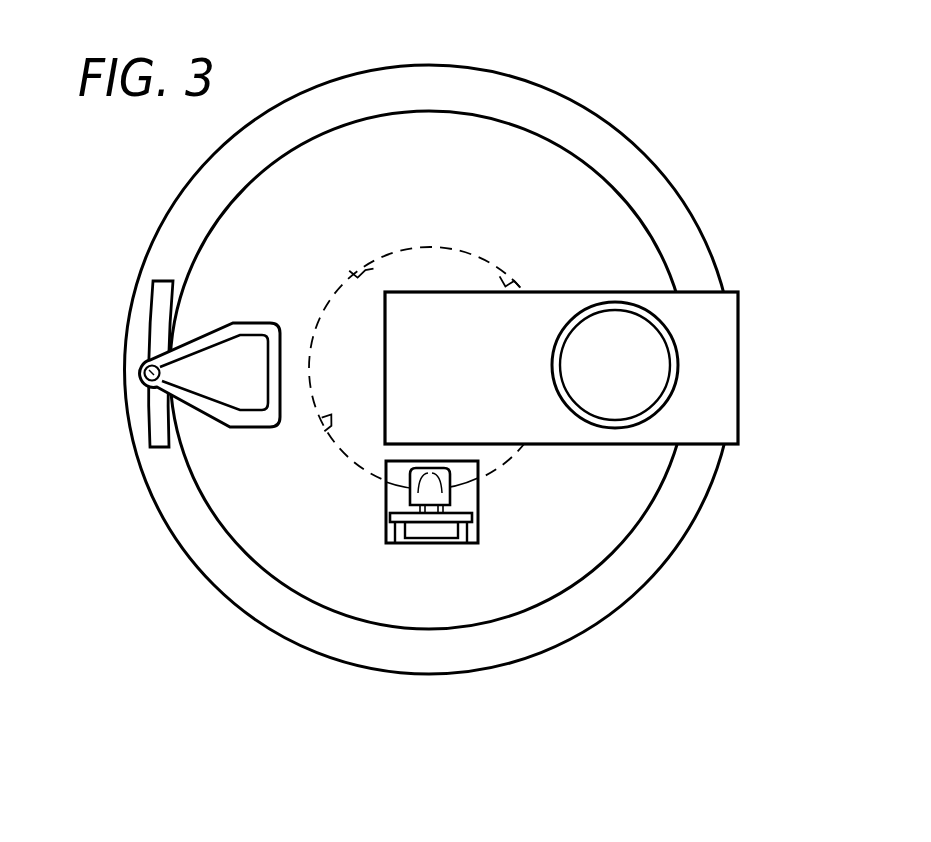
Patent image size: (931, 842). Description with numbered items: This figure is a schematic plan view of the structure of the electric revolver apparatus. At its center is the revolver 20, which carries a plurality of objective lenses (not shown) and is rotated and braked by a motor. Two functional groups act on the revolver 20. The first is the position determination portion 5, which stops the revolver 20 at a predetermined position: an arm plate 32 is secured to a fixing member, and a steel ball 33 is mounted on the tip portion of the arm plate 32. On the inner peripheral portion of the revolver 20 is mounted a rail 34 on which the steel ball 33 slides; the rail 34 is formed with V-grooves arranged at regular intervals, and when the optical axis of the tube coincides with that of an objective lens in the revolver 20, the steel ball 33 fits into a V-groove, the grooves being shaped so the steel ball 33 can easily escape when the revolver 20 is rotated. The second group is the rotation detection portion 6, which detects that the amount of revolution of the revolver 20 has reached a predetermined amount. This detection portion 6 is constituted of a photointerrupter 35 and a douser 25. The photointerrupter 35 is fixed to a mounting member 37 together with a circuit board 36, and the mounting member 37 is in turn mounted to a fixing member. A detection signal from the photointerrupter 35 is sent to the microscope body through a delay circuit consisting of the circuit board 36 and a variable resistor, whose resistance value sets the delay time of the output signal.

The position determination portion 5 is at (107, 392).
The rotation detection portion 6 is at (510, 587).
The revolver 20 is at (683, 192).
The douser 25 is at (398, 469).
The arm plate 32 is at (223, 390).
The steel ball 33 is at (142, 370).
The rail 34 is at (165, 290).
The photointerrupter 35 is at (412, 497).
The circuit board 36 is at (480, 514).
The mounting member 37 is at (463, 532).